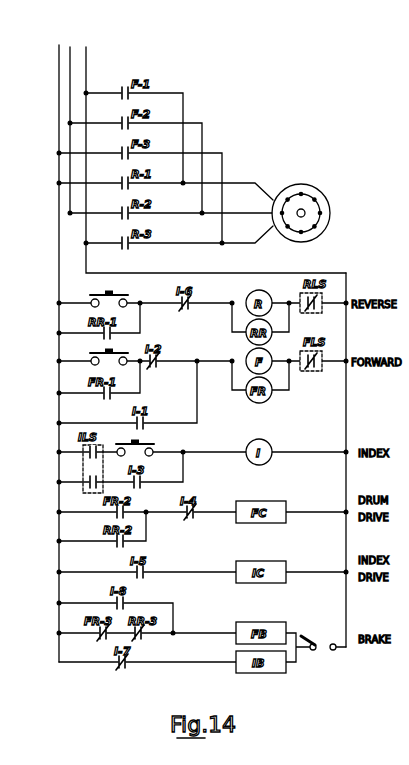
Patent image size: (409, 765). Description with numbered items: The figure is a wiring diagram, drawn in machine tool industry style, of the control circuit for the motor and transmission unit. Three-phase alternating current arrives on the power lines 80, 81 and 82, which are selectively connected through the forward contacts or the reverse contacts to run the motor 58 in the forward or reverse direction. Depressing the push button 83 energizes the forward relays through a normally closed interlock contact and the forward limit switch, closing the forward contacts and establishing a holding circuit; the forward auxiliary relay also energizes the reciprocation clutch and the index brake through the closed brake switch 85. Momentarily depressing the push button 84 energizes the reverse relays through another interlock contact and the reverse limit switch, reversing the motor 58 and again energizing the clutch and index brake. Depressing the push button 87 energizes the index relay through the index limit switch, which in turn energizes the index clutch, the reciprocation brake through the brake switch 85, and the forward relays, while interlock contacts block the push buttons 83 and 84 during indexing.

The power line 80 is at (59, 66).
The power line 81 is at (70, 52).
The power line 82 is at (86, 57).
The motor 58 is at (301, 190).
The push button 83 is at (92, 354).
The push button 84 is at (92, 295).
The brake switch 85 is at (318, 636).
The push button 87 is at (142, 444).